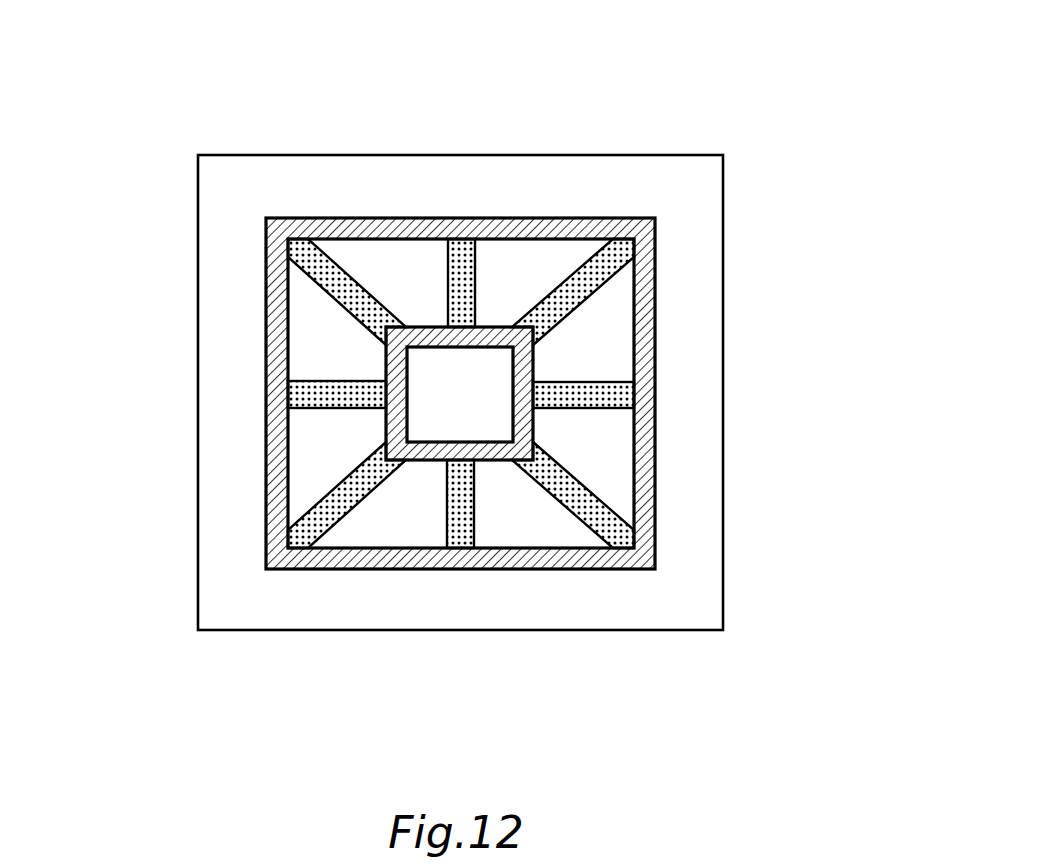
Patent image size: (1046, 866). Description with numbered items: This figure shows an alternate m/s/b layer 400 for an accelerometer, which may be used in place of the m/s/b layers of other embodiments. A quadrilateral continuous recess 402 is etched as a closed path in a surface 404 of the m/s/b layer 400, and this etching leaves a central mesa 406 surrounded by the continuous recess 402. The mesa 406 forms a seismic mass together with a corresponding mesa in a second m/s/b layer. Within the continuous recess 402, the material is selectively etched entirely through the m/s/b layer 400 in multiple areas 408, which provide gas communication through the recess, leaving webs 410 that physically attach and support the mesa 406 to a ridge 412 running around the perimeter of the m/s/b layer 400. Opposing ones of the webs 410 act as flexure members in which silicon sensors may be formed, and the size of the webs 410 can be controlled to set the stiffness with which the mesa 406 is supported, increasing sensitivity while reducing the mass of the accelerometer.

The m/s/b layer 400 is at (800, 248).
The continuous recess 402 is at (585, 347).
The surface 404 is at (655, 512).
The mesa 406 is at (482, 422).
The areas 408 is at (322, 318).
The webs 410 is at (548, 303).
The ridge 412 is at (225, 433).